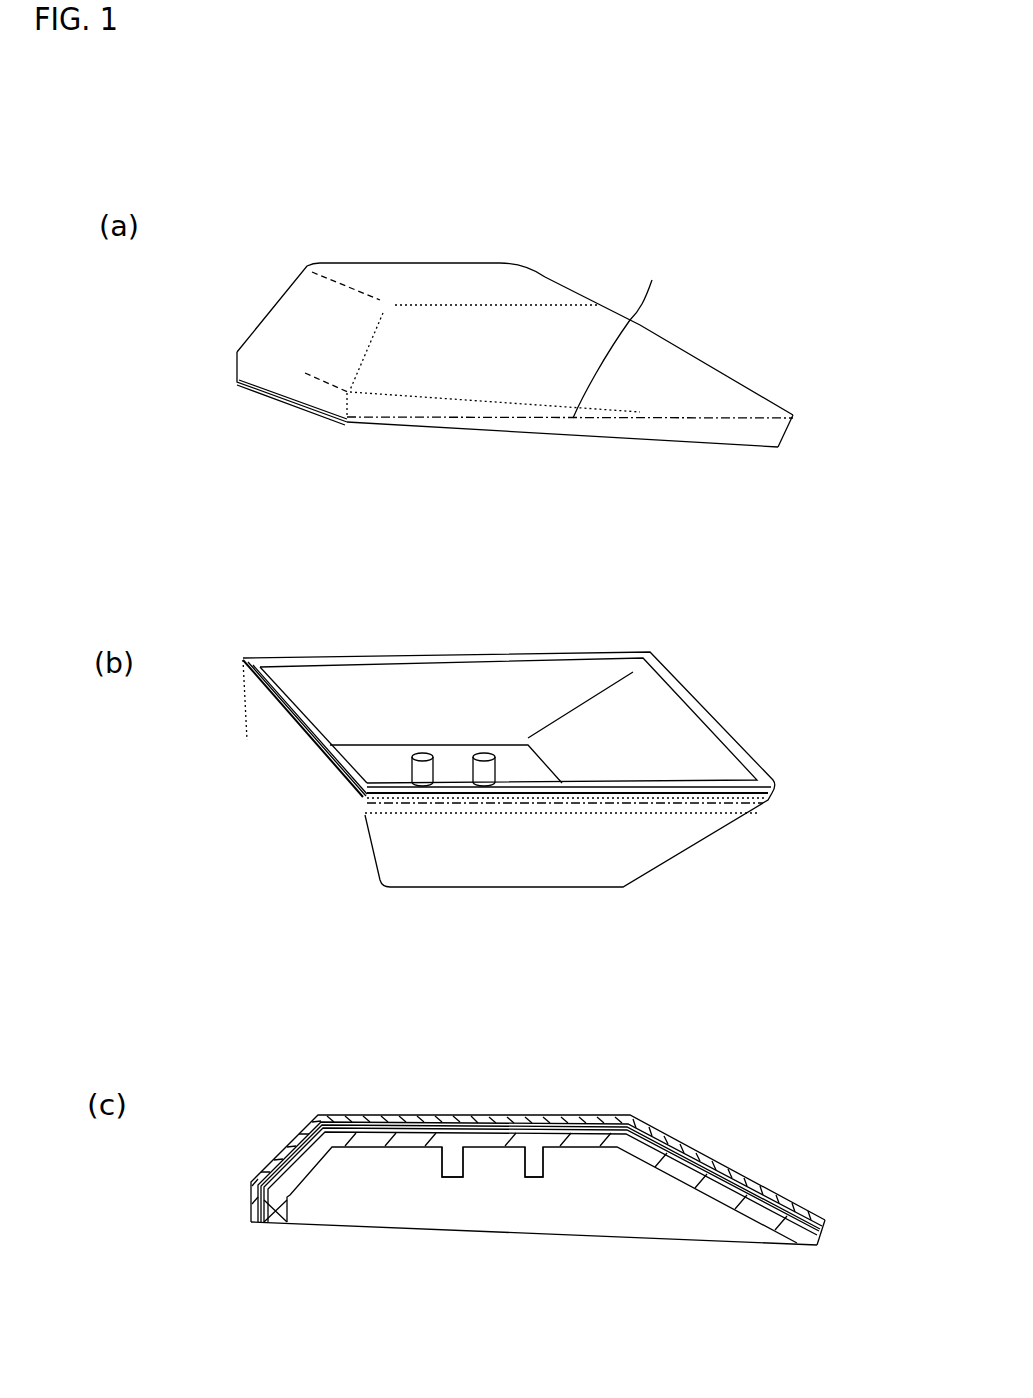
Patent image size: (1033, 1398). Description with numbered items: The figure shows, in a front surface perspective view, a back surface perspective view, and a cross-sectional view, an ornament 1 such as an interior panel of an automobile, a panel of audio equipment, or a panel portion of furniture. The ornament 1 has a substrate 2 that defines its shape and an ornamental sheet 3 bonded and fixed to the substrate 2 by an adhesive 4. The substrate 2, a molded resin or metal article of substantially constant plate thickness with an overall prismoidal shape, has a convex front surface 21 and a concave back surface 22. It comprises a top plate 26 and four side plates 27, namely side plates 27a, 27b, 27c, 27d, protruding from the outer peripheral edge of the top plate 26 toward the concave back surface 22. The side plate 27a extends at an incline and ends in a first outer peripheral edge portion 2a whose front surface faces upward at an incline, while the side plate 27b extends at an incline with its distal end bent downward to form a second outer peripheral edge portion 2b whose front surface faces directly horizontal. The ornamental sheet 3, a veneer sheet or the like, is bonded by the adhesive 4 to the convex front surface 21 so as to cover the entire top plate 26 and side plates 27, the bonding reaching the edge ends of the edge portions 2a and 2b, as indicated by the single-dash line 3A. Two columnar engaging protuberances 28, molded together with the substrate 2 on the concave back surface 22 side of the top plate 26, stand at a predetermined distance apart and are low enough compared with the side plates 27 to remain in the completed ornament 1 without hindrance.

The ornament 1 is at (579, 205).
The substrate 2 is at (445, 427).
The first outer peripheral edge portion 2a is at (797, 418).
The second outer peripheral edge portion 2b is at (250, 372).
The ornamental sheet 3 is at (630, 1118).
The single-dash line 3A is at (597, 922).
The adhesive 4 is at (583, 1133).
The convex front surface 21 is at (427, 893).
The concave back surface 22 is at (457, 674).
The top plate 26 is at (405, 278).
The side plates 27 is at (300, 262).
The side plate 27a is at (690, 347).
The side plate 27b is at (313, 360).
The side plate 27c is at (638, 387).
The side plate 27d is at (487, 842).
The engaging protuberances 28 is at (474, 752).